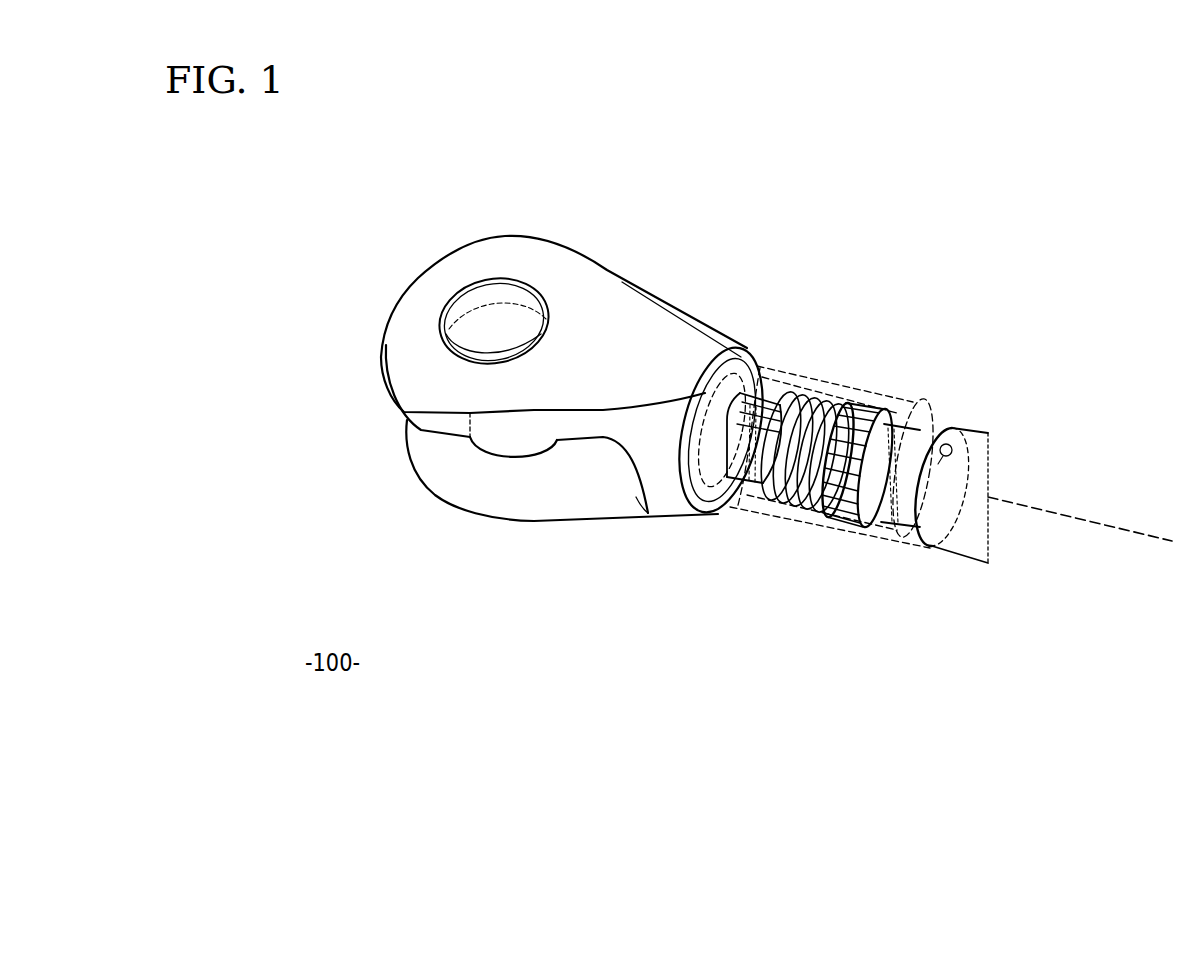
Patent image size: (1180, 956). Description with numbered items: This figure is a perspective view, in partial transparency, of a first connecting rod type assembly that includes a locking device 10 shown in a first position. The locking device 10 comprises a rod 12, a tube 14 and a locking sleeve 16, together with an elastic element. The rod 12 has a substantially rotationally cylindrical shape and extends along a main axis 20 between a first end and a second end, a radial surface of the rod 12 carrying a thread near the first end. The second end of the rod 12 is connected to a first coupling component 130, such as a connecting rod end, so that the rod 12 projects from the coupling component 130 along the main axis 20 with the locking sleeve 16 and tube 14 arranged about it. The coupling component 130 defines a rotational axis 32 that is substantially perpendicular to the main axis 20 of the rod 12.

The locking device 10 is at (467, 533).
The rod 12 is at (792, 327).
The tube 14 is at (978, 343).
The locking sleeve 16 is at (898, 352).
The main axis 20 is at (1135, 528).
The rotational axis 32 is at (497, 327).
The first coupling component 130 is at (669, 237).